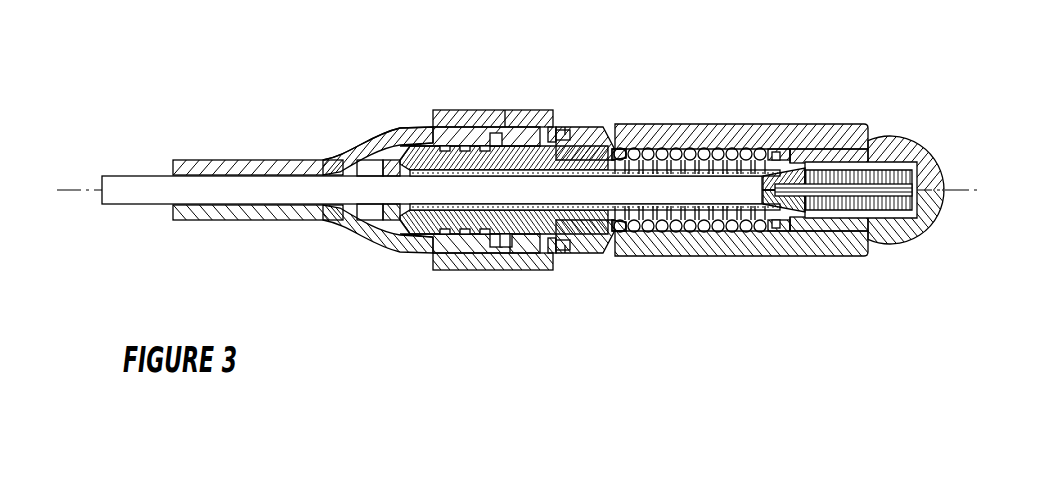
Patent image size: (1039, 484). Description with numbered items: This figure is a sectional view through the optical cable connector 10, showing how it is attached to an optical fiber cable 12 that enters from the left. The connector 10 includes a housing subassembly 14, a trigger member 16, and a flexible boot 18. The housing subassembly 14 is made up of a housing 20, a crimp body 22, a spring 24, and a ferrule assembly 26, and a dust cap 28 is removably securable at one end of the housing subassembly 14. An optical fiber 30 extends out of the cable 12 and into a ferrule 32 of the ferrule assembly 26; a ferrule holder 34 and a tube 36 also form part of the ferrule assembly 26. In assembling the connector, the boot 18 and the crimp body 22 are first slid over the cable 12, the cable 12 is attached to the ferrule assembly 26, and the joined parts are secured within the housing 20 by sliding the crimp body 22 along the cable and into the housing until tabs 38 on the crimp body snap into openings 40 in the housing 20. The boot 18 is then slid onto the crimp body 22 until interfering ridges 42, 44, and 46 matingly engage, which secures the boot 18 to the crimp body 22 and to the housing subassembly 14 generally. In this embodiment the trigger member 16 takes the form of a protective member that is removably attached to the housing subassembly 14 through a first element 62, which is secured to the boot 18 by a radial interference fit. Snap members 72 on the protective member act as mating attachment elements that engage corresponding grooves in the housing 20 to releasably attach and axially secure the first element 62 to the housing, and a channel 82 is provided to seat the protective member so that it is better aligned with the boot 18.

The connector 10 is at (743, 66).
The optical fiber cable 12 is at (160, 176).
The housing subassembly 14 is at (698, 258).
The trigger member 16 is at (475, 110).
The flexible boot 18 is at (372, 133).
The housing 20 is at (566, 126).
The crimp body 22 is at (505, 127).
The spring 24 is at (728, 150).
The ferrule assembly 26 is at (801, 165).
The dust cap 28 is at (940, 152).
The optical fiber 30 is at (872, 190).
The ferrule 32 is at (920, 207).
The ferrule holder 34 is at (792, 212).
The tube 36 is at (395, 210).
The tabs 38 is at (585, 127).
The openings 40 is at (614, 124).
The interfering ridges 42 is at (490, 252).
The interfering ridges 44 is at (510, 252).
The interfering ridges 46 is at (507, 244).
The first element 62 is at (405, 135).
The snap members 72 is at (558, 124).
The channel 82 is at (428, 122).